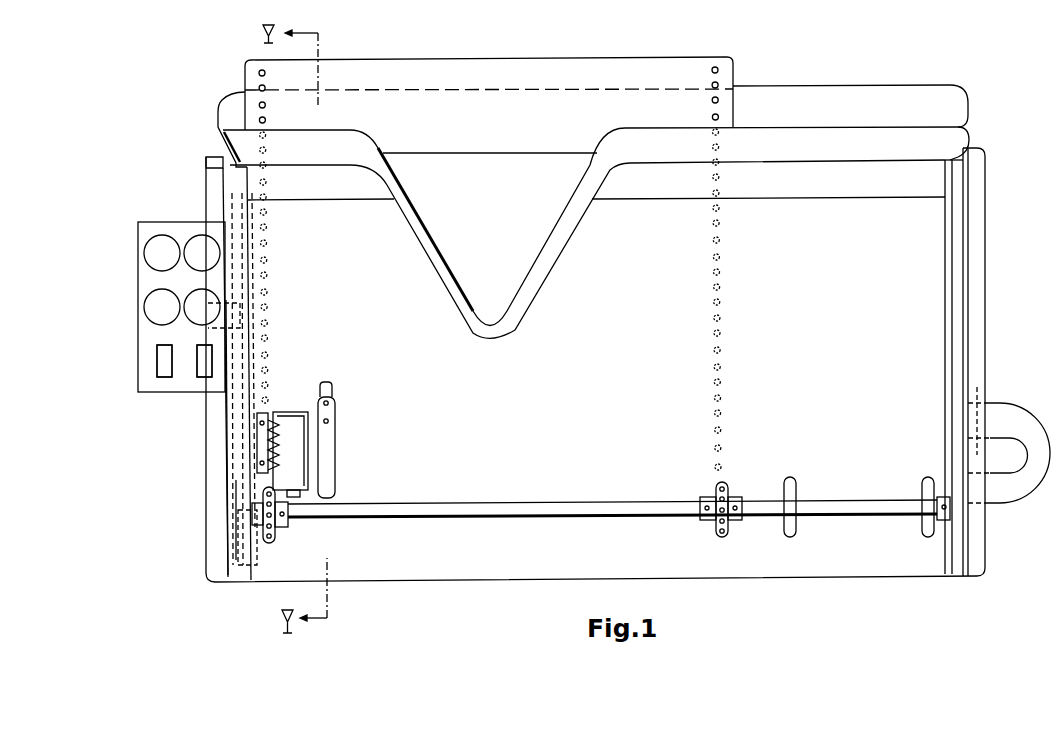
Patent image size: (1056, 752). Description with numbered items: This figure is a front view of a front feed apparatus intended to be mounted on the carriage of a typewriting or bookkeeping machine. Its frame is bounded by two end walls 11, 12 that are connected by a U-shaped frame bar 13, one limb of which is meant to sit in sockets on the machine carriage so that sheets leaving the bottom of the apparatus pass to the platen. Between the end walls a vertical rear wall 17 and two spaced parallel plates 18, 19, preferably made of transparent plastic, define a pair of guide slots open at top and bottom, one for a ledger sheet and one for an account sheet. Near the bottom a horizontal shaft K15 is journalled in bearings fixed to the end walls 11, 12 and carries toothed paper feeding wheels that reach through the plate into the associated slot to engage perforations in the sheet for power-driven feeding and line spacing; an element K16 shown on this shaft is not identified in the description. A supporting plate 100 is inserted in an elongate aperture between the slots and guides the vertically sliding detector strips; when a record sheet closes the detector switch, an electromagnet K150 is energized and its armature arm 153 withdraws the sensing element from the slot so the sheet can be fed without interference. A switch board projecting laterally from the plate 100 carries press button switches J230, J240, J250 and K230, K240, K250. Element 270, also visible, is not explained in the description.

The end wall 11 is at (238, 490).
The end wall 12 is at (960, 282).
The U-shaped frame bar 13 is at (1031, 420).
The vertical rear wall 17 is at (780, 102).
The plate 18 is at (821, 138).
The plate 19 is at (862, 175).
The supporting plate 100 is at (238, 345).
The guide rail 270 is at (220, 375).
The horizontal shaft K15 is at (850, 510).
The clamp K16 is at (268, 540).
The electromagnet K150 is at (295, 440).
The arm 153 is at (335, 495).
The press button switch K250 is at (171, 252).
The press button switch K240 is at (152, 298).
The press button switch K230 is at (157, 367).
The press button switch J250 is at (207, 257).
The press button switch J240 is at (208, 298).
The press button switch J230 is at (207, 367).